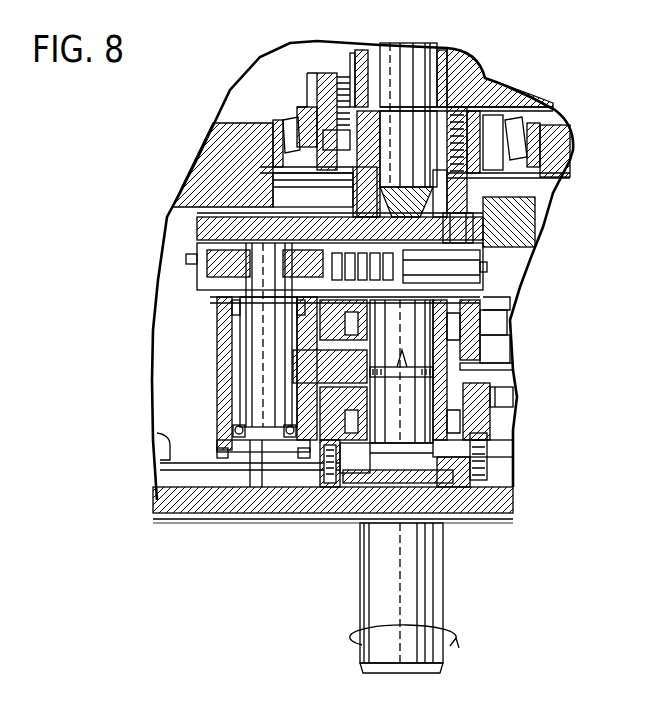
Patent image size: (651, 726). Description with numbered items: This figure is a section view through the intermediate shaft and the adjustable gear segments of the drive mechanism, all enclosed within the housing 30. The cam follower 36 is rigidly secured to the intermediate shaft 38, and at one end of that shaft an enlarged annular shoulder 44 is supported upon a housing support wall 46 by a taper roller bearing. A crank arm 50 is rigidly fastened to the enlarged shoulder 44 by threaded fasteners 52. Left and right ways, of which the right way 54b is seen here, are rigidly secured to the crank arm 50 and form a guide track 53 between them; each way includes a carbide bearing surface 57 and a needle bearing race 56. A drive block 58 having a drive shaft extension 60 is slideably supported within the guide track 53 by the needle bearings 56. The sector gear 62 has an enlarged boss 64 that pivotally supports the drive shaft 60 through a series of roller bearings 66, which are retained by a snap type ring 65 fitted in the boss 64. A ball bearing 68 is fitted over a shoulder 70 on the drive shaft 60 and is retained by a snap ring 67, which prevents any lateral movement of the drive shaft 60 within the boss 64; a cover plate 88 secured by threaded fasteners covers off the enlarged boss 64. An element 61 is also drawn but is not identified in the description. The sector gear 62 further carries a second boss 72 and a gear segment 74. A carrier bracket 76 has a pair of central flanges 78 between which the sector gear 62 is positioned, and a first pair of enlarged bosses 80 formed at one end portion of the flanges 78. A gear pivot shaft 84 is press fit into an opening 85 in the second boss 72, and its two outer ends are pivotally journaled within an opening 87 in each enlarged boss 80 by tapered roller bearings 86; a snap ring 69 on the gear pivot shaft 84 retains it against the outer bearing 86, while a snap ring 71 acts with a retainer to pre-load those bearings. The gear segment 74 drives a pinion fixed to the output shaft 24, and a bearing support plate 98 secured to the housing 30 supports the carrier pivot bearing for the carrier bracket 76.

The output shaft 24 is at (443, 664).
The housing 30 is at (160, 505).
The cam follower 36 is at (490, 88).
The intermediate shaft 38 is at (305, 100).
The enlarged annular shoulder 44 is at (490, 115).
The housing support wall 46 is at (233, 123).
The crank arm 50 is at (207, 227).
The threaded fasteners 52 is at (460, 197).
The guide track 53 is at (392, 120).
The right way 54b is at (400, 275).
The needle bearing race 56 is at (335, 255).
The carbide bearing surface 57 is at (467, 260).
The drive block 58 is at (195, 260).
The drive shaft extension 60 is at (323, 327).
The bearing retainer 61 is at (273, 450).
The sector gear 62 is at (235, 392).
The enlarged boss 64 is at (250, 352).
The snap type ring 65 is at (250, 315).
The roller bearings 66 is at (215, 377).
The snap ring 67 is at (225, 458).
The ball bearing 68 is at (225, 423).
The snap ring 69 is at (330, 425).
The shoulder 70 is at (248, 450).
The snap ring 71 is at (480, 303).
The second boss 72 is at (367, 357).
The gear segment 74 is at (510, 405).
The carrier bracket 76 is at (507, 317).
The central flanges 78 is at (500, 330).
The first pair of enlarged bosses 80 is at (235, 345).
The gear pivot shaft 84 is at (457, 523).
The opening 85 is at (350, 490).
The tapered roller bearings 86 is at (357, 327).
The opening 87 is at (510, 397).
The cover plate 88 is at (257, 440).
The bearing support plate 98 is at (165, 440).